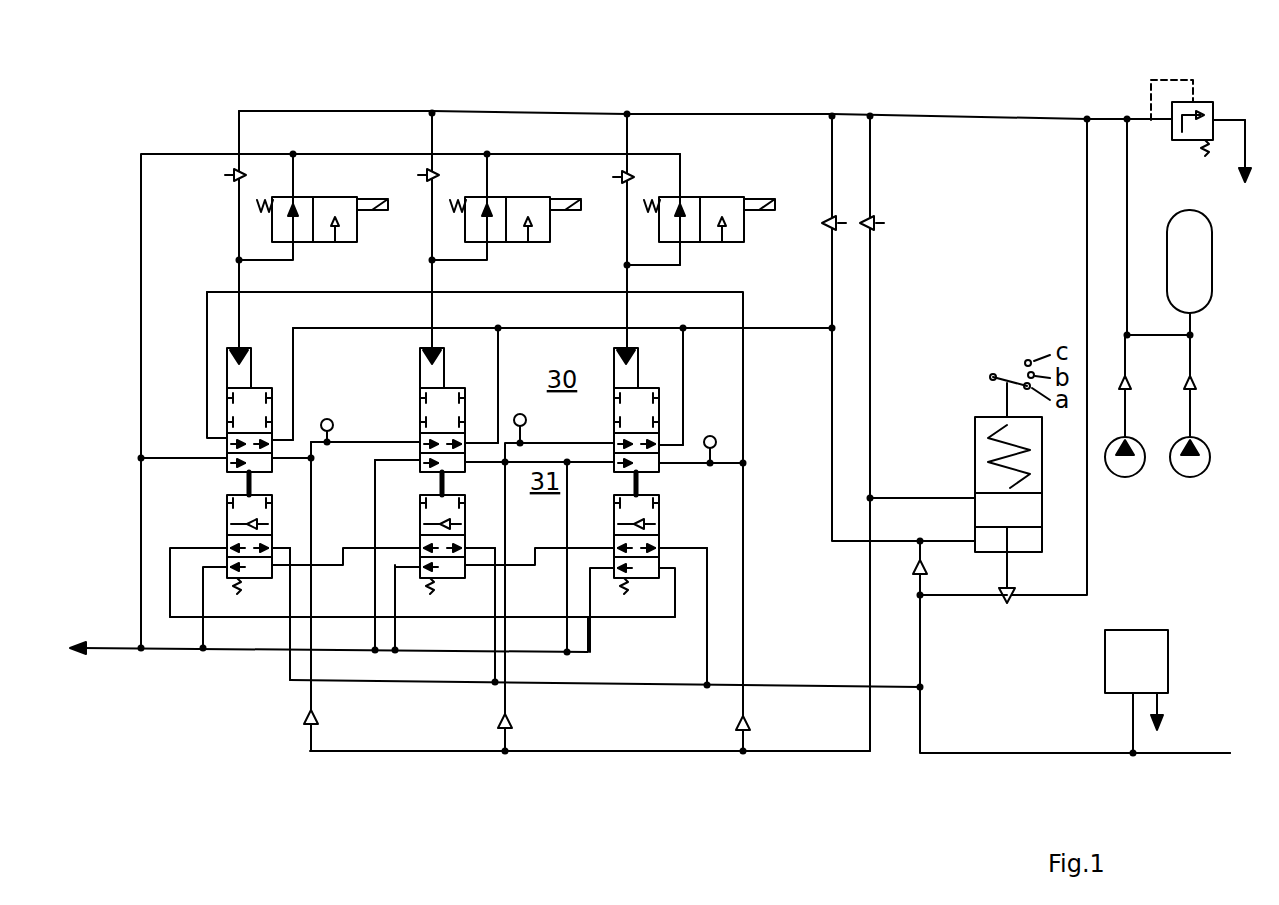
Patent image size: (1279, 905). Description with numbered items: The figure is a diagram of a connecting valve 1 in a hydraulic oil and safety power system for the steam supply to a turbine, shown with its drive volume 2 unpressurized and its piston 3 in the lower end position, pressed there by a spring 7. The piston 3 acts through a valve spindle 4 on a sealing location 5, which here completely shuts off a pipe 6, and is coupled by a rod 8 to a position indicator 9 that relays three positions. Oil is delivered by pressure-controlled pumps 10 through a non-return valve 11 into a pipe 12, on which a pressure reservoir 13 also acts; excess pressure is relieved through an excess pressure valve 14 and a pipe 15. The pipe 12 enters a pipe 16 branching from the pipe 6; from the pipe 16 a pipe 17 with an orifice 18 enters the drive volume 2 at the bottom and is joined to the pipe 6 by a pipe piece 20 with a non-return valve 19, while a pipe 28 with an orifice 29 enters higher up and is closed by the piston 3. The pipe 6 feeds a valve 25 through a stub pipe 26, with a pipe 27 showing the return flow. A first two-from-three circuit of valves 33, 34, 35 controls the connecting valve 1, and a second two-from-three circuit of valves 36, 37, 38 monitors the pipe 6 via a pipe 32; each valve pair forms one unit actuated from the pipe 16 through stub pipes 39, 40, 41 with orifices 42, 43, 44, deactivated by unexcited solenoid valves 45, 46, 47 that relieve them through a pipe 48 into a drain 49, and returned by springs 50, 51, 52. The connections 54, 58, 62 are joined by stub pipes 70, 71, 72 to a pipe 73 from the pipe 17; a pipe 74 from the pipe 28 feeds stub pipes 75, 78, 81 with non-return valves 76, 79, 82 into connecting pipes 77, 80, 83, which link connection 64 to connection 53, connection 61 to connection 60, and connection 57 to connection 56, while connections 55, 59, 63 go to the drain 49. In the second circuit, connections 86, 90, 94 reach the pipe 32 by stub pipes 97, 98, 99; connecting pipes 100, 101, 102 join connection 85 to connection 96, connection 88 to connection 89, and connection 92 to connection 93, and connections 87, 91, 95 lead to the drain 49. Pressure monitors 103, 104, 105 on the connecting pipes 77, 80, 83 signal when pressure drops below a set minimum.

The connecting valve 1 is at (1013, 526).
The drive volume 2 is at (1022, 539).
The piston 3 is at (1008, 500).
The valve spindle 4 is at (1010, 574).
The sealing location 5 is at (1010, 602).
The pipe 6 is at (1085, 153).
The spring 7 is at (1030, 442).
The rod 8 is at (1005, 400).
The position indicator 9 is at (1047, 398).
The pressure-controlled pumps 10 is at (1128, 460).
The non-return valve 11 is at (1132, 387).
The pipe 12 is at (1147, 333).
The pressure reservoir 13 is at (1190, 265).
The excess pressure valve 14 is at (1206, 120).
The pipe 15 is at (1232, 116).
The pipe 16 is at (983, 115).
The pipe 17 is at (834, 125).
The orifice 18 is at (828, 220).
The non-return valve 19 is at (915, 578).
The pipe piece 20 is at (917, 558).
The valve 25 is at (1150, 653).
The stub pipe 26 is at (1140, 743).
The pipe 27 is at (1162, 707).
The pipe 28 is at (876, 130).
The orifice 29 is at (882, 222).
The pipe 32 is at (897, 690).
The valve 33 is at (254, 386).
The valve 34 is at (448, 386).
The valve 35 is at (643, 386).
The valve 36 is at (270, 524).
The valve 37 is at (463, 524).
The valve 38 is at (660, 503).
The stub pipe 39 is at (237, 106).
The stub pipe 40 is at (434, 108).
The stub pipe 41 is at (630, 108).
The orifice 42 is at (244, 172).
The orifice 43 is at (437, 172).
The orifice 44 is at (633, 173).
The solenoid valve 45 is at (316, 197).
The solenoid valve 46 is at (515, 197).
The solenoid valve 47 is at (706, 197).
The pipe 48 is at (141, 272).
The drain 49 is at (120, 656).
The spring 50 is at (240, 594).
The spring 51 is at (432, 590).
The spring 52 is at (622, 592).
The connection 53 is at (226, 438).
The connection 54 is at (277, 438).
The connection 55 is at (226, 460).
The connection 56 is at (274, 461).
The connection 57 is at (420, 442).
The connection 58 is at (468, 442).
The connection 59 is at (419, 463).
The connection 60 is at (468, 463).
The connection 61 is at (613, 444).
The connection 62 is at (663, 443).
The connection 63 is at (613, 464).
The connection 64 is at (661, 465).
The stub pipe 70 is at (295, 360).
The stub pipe 71 is at (500, 362).
The stub pipe 72 is at (685, 362).
The pipe 73 is at (801, 327).
The pipe 74 is at (829, 753).
The stub pipe 75 is at (745, 697).
The non-return valve 76 is at (738, 730).
The connecting pipe 77 is at (745, 393).
The stub pipe 78 is at (507, 694).
The non-return valve 79 is at (502, 730).
The connecting pipe 80 is at (556, 443).
The stub pipe 81 is at (313, 694).
The non-return valve 82 is at (308, 726).
The connecting pipe 83 is at (329, 446).
The connection 85 is at (226, 548).
The connection 86 is at (272, 560).
The connection 87 is at (228, 570).
The connection 88 is at (270, 568).
The connection 89 is at (419, 548).
The connection 90 is at (467, 560).
The connection 91 is at (420, 570).
The connection 92 is at (467, 568).
The connection 93 is at (613, 548).
The connection 94 is at (660, 548).
The connection 95 is at (613, 571).
The connection 96 is at (659, 570).
The stub pipe 97 is at (288, 664).
The stub pipe 98 is at (494, 662).
The stub pipe 99 is at (705, 657).
The connecting pipe 100 is at (170, 578).
The connecting pipe 101 is at (357, 551).
The connecting pipe 102 is at (521, 567).
The pressure monitor 103 is at (720, 435).
The pressure monitor 104 is at (332, 421).
The pressure monitor 105 is at (518, 412).